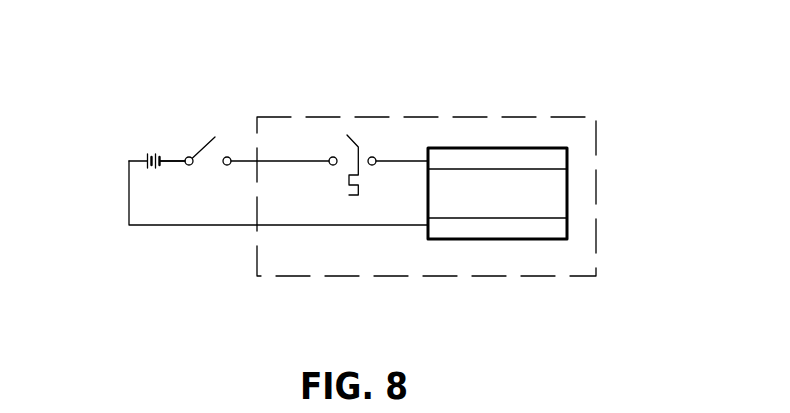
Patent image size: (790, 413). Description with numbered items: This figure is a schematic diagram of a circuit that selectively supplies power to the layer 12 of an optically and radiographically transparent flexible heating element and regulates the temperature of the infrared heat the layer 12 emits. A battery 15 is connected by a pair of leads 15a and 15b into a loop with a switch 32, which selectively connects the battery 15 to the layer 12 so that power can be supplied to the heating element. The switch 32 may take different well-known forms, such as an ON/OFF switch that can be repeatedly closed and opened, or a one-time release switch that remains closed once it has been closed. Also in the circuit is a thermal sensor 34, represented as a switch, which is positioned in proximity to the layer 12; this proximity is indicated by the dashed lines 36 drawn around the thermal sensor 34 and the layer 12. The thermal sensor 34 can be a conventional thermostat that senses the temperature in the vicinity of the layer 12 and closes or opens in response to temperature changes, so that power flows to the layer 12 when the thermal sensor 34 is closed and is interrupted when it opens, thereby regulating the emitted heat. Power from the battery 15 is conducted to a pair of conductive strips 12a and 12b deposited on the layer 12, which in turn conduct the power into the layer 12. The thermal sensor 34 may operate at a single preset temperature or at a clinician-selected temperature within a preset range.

The layer of an optically and radiographically transparent flexible heating element 12 is at (553, 196).
The conductive strip 12a is at (553, 163).
The conductive strip 12b is at (551, 228).
The battery 15 is at (155, 153).
The lead 15a is at (173, 161).
The lead 15b is at (213, 226).
The switch 32 is at (198, 153).
The thermal sensor 34 is at (357, 143).
The dashed lines 36 is at (480, 115).